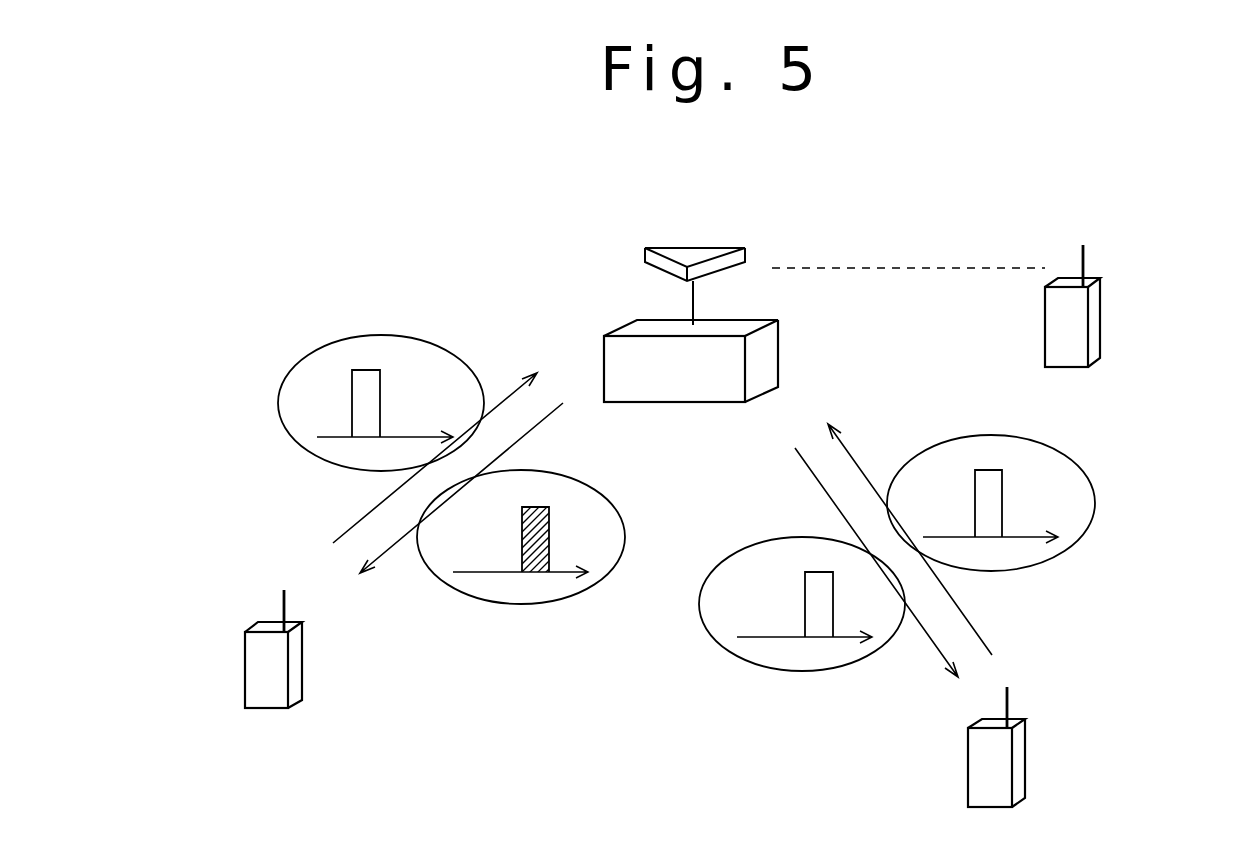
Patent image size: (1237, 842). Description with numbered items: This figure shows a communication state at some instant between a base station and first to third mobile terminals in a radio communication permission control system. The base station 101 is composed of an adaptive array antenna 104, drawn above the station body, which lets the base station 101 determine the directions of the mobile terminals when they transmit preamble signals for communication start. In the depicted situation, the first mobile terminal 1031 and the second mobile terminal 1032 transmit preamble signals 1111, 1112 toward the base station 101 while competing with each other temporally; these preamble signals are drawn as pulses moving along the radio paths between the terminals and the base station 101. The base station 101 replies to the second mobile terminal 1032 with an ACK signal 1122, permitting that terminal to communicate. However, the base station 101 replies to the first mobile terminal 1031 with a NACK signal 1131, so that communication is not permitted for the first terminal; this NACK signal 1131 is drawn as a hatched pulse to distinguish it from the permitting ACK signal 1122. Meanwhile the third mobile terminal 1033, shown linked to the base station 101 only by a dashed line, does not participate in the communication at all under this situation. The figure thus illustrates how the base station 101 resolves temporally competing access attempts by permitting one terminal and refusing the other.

The base station 101 is at (763, 360).
The adaptive array antenna 104 is at (692, 255).
The first mobile terminal 1031 is at (295, 665).
The second mobile terminal 1032 is at (1015, 763).
The third mobile terminal 1033 is at (1093, 322).
The preamble signal 1111 is at (315, 353).
The preamble signal 1112 is at (1053, 450).
The ACK signal 1122 is at (733, 553).
The NACK signal 1131 is at (594, 485).